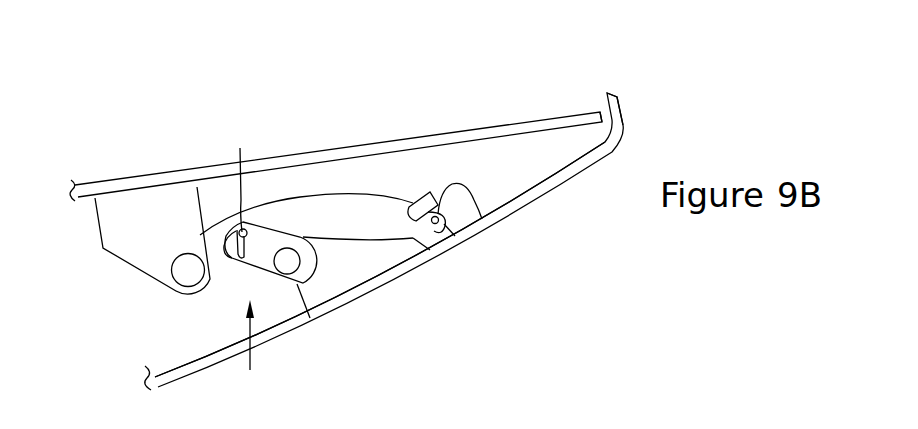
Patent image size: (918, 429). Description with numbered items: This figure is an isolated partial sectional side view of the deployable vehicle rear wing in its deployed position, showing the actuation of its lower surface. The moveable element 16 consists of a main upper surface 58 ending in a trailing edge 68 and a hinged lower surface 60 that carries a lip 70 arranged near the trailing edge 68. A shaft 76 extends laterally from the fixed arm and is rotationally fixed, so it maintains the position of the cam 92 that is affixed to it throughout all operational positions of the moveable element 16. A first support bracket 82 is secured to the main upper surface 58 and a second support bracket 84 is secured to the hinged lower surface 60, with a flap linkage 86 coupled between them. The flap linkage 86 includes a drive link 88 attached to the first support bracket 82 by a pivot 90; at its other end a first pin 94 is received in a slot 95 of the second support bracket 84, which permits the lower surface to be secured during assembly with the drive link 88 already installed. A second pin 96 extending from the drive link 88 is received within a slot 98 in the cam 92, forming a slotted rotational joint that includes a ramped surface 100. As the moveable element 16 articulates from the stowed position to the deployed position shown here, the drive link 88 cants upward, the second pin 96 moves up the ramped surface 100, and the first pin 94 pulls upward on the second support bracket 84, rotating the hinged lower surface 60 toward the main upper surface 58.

The moveable element 16 is at (308, 130).
The main upper surface 58 is at (197, 172).
The hinged lower surface 60 is at (385, 273).
The trailing edge 68 is at (597, 110).
The lip 70 is at (618, 97).
The shaft 76 is at (288, 261).
The first support bracket 82 is at (107, 230).
The second support bracket 84 is at (470, 208).
The flap linkage 86 is at (250, 370).
The drive link 88 is at (368, 207).
The pivot 90 is at (182, 272).
The cam 92 is at (303, 306).
The first pin 94 is at (434, 193).
The slot 95 is at (441, 226).
The second pin 96 is at (240, 148).
The slot 98 is at (223, 264).
The ramped surface 100 is at (246, 231).